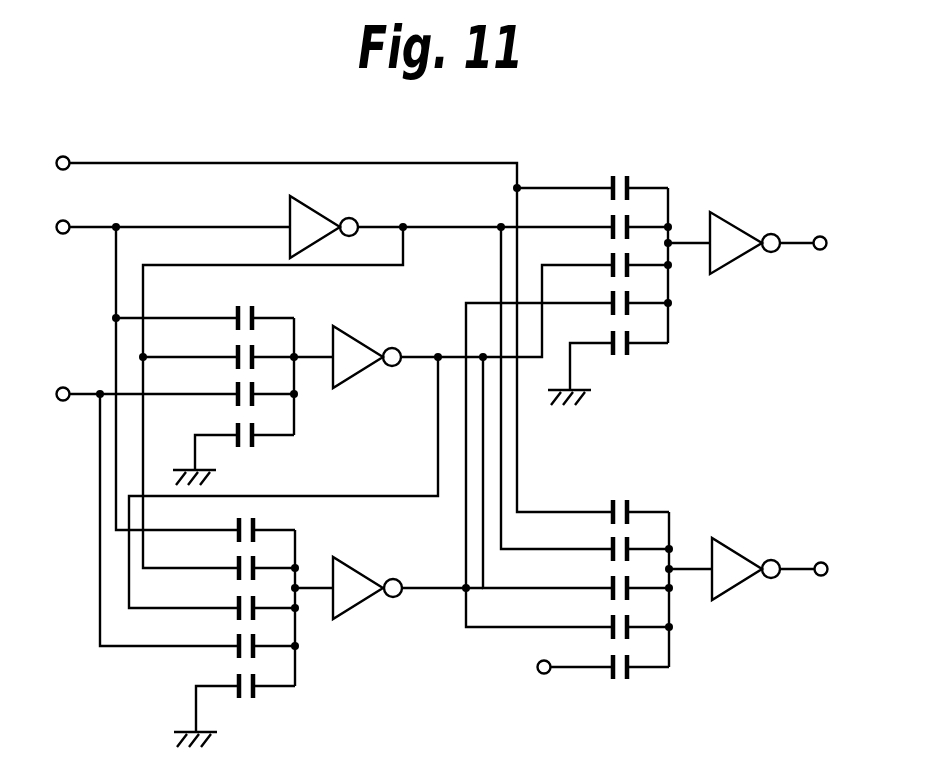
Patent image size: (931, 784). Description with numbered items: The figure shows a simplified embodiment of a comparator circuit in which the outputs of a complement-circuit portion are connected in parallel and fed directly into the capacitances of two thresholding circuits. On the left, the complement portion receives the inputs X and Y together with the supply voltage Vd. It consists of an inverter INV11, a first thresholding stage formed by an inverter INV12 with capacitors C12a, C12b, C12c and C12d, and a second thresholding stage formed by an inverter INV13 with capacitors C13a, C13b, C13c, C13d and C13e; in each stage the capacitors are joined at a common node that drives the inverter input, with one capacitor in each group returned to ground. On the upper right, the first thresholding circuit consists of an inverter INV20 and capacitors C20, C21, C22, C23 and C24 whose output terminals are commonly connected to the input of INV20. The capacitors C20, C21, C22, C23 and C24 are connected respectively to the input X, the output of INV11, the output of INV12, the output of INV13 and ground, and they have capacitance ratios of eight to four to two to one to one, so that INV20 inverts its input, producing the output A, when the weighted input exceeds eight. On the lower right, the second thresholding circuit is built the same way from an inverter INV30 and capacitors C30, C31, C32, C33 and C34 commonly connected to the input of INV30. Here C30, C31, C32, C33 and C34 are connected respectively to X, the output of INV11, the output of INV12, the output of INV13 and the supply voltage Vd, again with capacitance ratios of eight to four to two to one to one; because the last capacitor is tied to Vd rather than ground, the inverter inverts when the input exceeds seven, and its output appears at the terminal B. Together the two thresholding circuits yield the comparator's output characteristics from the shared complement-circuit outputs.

The input X is at (323, 331).
The input Y is at (161, 372).
The supply voltage Vd is at (320, 531).
The output A is at (816, 244).
The output B is at (816, 570).
The inverter INV11 is at (335, 219).
The inverter INV12 is at (375, 349).
The inverter INV13 is at (378, 580).
The inverter INV20 is at (750, 233).
The inverter INV30 is at (753, 560).
The capacitor C12a is at (238, 310).
The capacitor C12b is at (238, 349).
The capacitor C12c is at (238, 386).
The capacitor C12d is at (233, 446).
The capacitor C13a is at (238, 522).
The capacitor C13b is at (238, 560).
The capacitor C13c is at (238, 600).
The capacitor C13d is at (238, 638).
The capacitor C13e is at (234, 702).
The capacitor C20 is at (615, 180).
The capacitor C21 is at (615, 218).
The capacitor C22 is at (615, 257).
The capacitor C23 is at (615, 295).
The capacitor C24 is at (608, 360).
The capacitor C30 is at (616, 504).
The capacitor C31 is at (616, 541).
The capacitor C32 is at (616, 580).
The capacitor C33 is at (616, 619).
The capacitor C34 is at (616, 659).